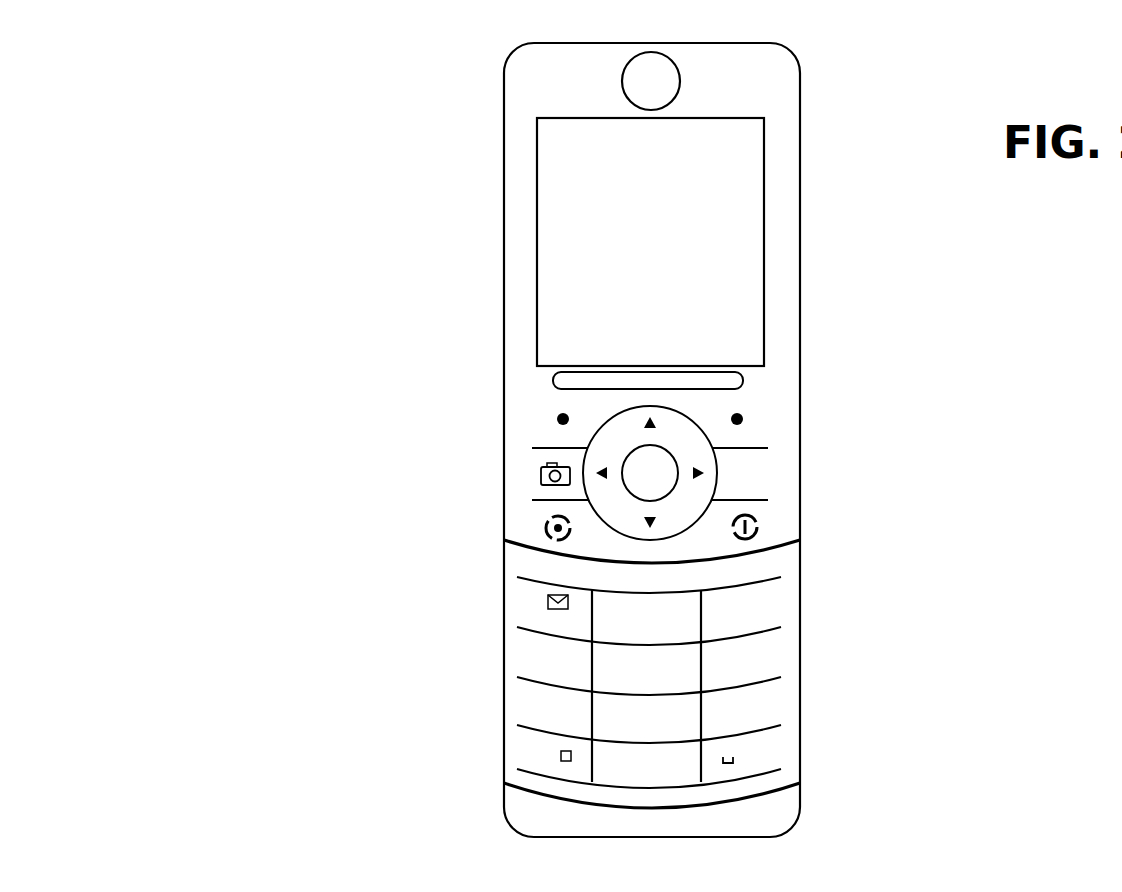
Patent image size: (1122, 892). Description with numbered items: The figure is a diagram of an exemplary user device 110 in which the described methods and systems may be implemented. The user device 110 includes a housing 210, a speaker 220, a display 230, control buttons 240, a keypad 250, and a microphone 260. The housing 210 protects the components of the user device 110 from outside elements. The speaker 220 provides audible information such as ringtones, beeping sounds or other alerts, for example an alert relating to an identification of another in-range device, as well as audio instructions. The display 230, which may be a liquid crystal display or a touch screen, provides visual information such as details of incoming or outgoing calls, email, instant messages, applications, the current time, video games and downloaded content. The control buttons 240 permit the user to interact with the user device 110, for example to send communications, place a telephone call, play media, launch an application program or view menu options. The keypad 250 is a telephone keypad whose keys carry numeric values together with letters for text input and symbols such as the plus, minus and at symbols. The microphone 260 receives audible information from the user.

The user device 110 is at (152, 139).
The housing 210 is at (520, 250).
The speaker 220 is at (680, 74).
The display 230 is at (740, 277).
The control buttons 240 is at (773, 433).
The keypad 250 is at (798, 735).
The microphone 260 is at (763, 815).